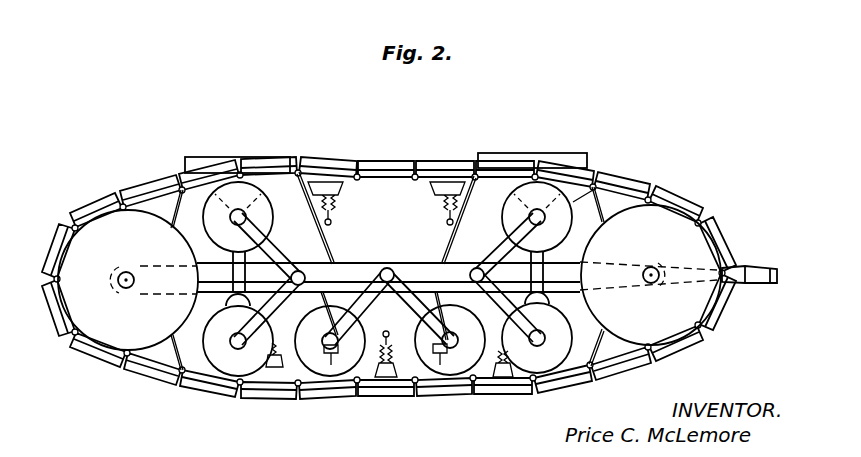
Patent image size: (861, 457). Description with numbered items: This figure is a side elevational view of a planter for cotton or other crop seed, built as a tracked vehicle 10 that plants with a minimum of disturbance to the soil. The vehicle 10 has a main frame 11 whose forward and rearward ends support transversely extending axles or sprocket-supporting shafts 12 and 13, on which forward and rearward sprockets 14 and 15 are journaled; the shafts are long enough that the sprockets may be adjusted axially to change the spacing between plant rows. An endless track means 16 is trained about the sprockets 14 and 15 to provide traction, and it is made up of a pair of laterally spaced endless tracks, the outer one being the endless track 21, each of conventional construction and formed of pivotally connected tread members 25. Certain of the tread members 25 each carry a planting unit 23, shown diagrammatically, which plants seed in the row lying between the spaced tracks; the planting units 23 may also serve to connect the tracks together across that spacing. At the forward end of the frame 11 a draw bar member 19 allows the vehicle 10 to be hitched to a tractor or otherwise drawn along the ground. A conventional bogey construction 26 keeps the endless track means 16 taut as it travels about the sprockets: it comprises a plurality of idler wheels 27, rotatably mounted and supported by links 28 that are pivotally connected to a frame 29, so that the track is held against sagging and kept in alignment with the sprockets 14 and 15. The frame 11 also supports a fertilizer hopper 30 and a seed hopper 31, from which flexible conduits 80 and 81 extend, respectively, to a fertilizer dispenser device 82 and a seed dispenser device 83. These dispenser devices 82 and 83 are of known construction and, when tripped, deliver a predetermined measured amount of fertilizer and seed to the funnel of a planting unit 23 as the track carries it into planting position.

The vehicle 10 is at (658, 133).
The main frame 11 is at (390, 257).
The forward axle or sprocket-supporting shaft 12 is at (655, 268).
The rearward axle or sprocket-supporting shaft 13 is at (122, 270).
The forward sprocket 14 is at (663, 210).
The rearward sprocket 15 is at (90, 227).
The endless track means 16 is at (638, 173).
The draw bar member 19 is at (740, 268).
The outer endless track 21 is at (597, 182).
The planting unit 23 is at (422, 196).
The tread member 25 is at (437, 177).
The bogey construction 26 is at (353, 280).
The idler wheel 27 is at (240, 190).
The link 28 is at (290, 276).
The bogey frame 29 is at (315, 275).
The fertilizer hopper 30 is at (534, 153).
The seed hopper 31 is at (221, 157).
The flexible conduit 80 is at (507, 243).
The flexible conduit 81 is at (333, 243).
The fertilizer dispenser device 82 is at (447, 352).
The seed dispenser device 83 is at (350, 338).